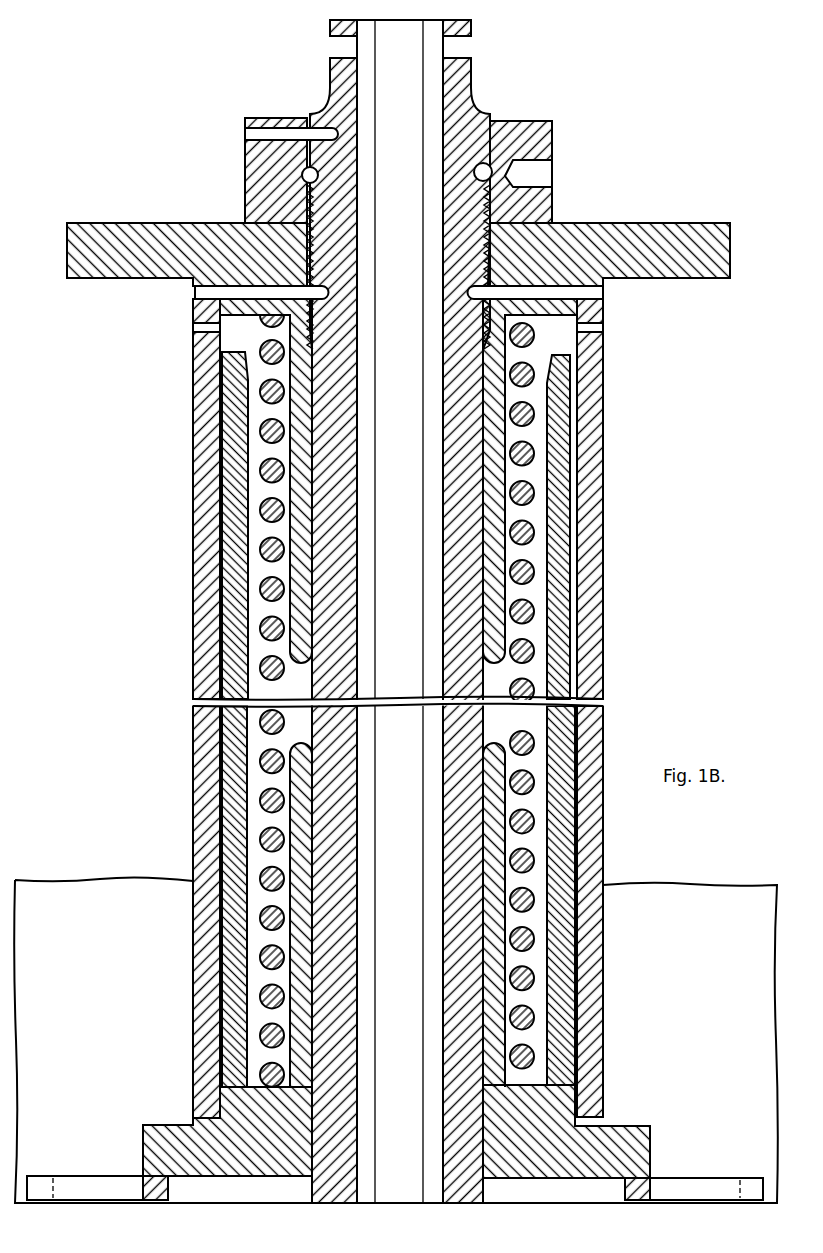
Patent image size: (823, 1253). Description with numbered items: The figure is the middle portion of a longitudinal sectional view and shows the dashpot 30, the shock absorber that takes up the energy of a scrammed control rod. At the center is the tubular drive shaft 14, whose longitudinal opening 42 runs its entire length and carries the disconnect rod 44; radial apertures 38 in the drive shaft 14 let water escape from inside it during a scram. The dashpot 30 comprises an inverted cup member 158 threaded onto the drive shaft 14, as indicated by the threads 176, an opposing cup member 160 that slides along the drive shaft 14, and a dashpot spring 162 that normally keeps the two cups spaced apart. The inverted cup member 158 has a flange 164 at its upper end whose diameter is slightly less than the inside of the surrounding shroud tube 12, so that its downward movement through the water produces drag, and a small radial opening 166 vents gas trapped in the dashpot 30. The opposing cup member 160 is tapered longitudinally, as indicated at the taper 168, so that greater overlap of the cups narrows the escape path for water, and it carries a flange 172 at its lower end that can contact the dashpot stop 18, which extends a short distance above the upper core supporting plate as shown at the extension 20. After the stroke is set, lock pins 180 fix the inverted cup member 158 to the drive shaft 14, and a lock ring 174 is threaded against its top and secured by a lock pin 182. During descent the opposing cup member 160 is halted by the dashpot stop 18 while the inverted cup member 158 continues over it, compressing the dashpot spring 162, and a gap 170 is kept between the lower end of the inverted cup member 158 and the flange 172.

The shroud tube 12 is at (83, 880).
The drive shaft 14 is at (472, 81).
The dashpot stop 18 is at (32, 1183).
The upward extension of dashpot stop 20 is at (692, 1184).
The dashpot 30 is at (181, 537).
The radial apertures 38 is at (460, 48).
The longitudinal opening 42 is at (355, 72).
The disconnect rod 44 is at (388, 44).
The inverted cup member 158 is at (590, 975).
The opposing cup member 160 is at (560, 1030).
The dashpot spring 162 is at (535, 652).
The flange 164 is at (693, 238).
The radial opening 166 is at (195, 328).
The taper 168 is at (572, 490).
The gap 170 is at (570, 430).
The flange 172 is at (650, 1135).
The lock ring 174 is at (552, 133).
The threads 176 is at (488, 205).
The lock pins 180 is at (195, 292).
The lock pin 182 is at (245, 130).